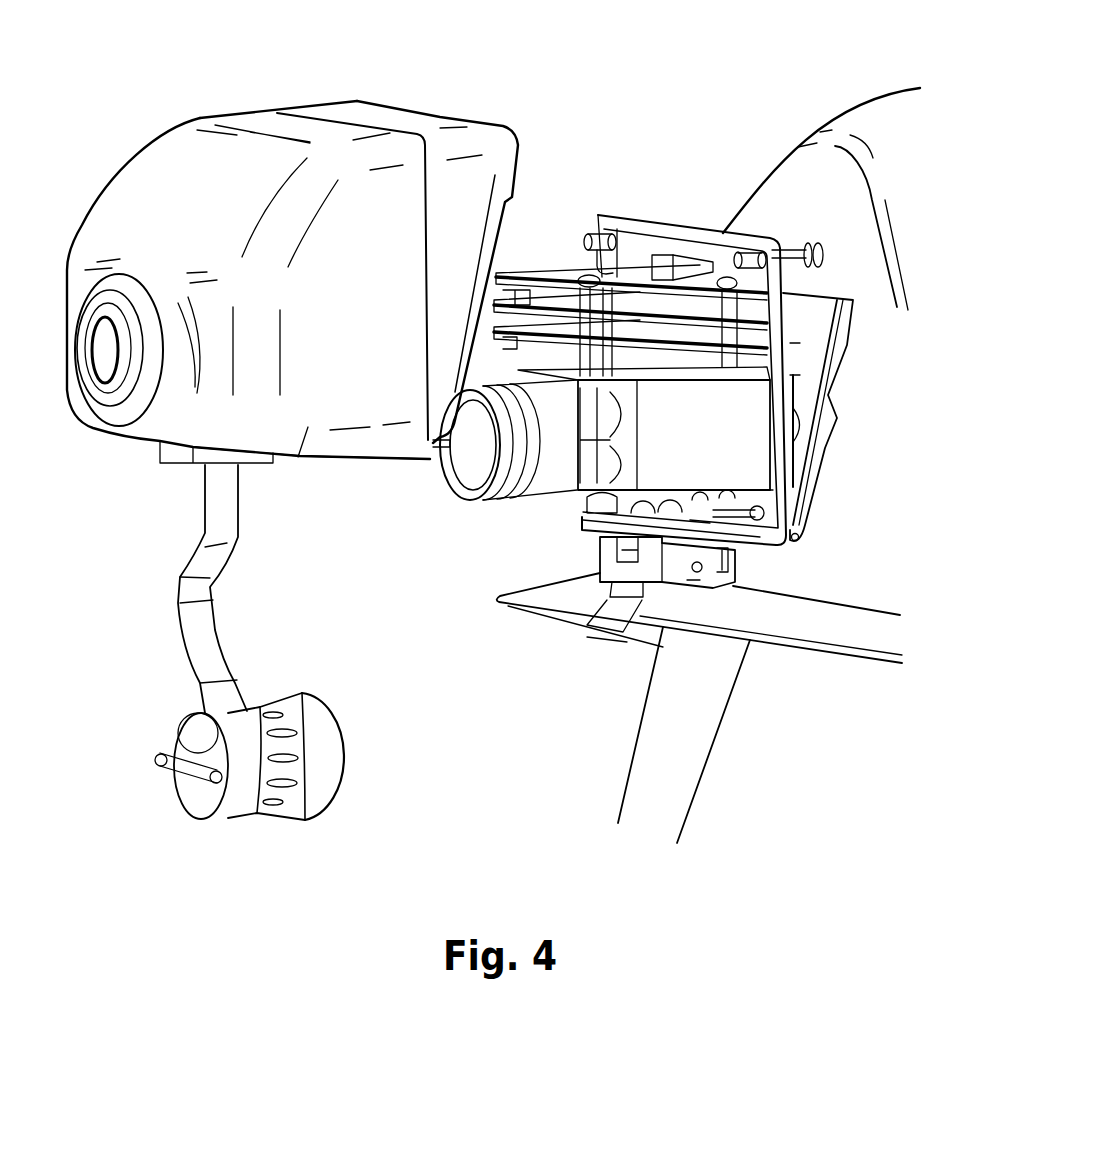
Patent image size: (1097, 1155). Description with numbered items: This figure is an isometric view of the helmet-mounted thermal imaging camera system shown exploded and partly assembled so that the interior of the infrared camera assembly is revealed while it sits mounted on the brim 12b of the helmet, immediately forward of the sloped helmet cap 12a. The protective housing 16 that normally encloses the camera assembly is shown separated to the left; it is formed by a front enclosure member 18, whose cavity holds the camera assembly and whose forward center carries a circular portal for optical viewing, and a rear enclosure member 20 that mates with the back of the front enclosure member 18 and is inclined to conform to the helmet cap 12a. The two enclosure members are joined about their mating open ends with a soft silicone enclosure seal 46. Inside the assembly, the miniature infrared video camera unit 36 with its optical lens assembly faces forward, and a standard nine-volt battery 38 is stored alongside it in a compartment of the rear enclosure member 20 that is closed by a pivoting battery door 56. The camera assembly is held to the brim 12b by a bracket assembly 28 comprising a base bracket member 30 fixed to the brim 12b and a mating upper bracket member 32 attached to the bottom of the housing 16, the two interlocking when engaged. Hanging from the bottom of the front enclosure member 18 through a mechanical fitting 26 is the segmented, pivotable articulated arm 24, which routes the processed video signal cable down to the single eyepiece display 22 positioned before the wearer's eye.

The helmet cap 12a is at (799, 138).
The brim 12b is at (812, 655).
The protective housing 16 is at (376, 458).
The front enclosure member 18 is at (200, 118).
The rear enclosure member 20 is at (435, 112).
The single eyepiece display 22 is at (312, 683).
The articulated arm 24 is at (178, 607).
The mechanical fitting 26 is at (167, 467).
The bracket assembly 28 is at (590, 550).
The base bracket member 30 is at (578, 628).
The upper bracket member 32 is at (630, 633).
The infrared video camera unit 36 is at (485, 512).
The battery 38 is at (796, 462).
The enclosure seal 46 is at (675, 222).
The battery door 56 is at (838, 415).